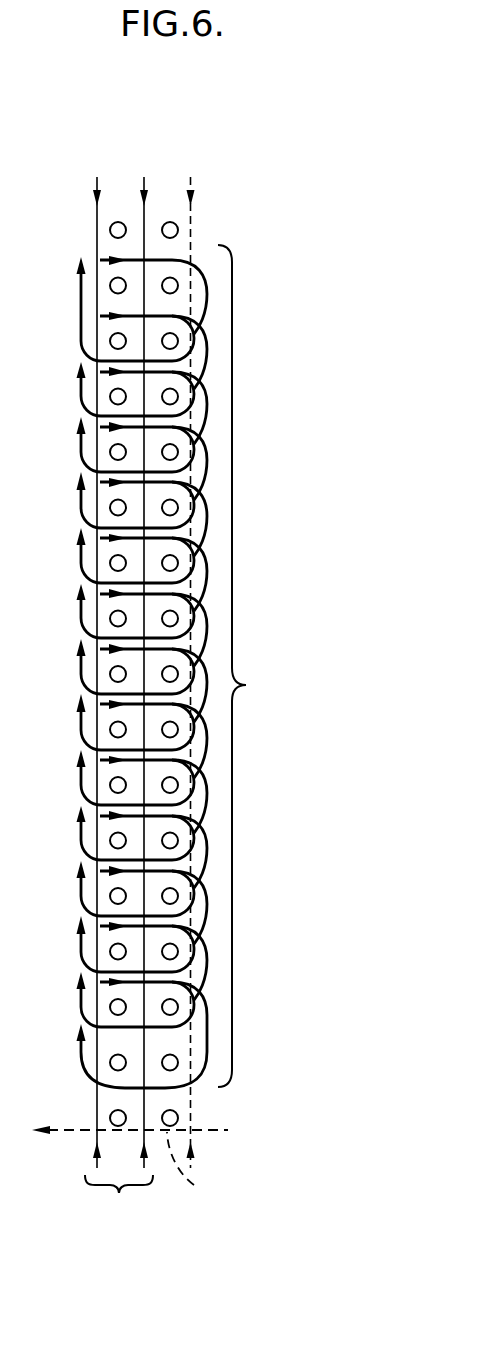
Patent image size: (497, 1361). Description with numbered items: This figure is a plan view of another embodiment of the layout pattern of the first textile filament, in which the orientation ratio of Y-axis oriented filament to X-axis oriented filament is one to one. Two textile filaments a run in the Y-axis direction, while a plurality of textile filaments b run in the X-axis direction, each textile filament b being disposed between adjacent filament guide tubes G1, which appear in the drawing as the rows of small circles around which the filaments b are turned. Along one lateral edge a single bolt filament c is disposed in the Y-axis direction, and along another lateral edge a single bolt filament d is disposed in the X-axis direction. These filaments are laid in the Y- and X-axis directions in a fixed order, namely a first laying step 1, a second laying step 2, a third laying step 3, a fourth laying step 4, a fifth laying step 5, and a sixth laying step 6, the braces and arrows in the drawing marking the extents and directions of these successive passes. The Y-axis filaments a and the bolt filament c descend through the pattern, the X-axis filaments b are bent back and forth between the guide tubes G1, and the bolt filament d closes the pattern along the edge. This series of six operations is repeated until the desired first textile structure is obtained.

The first laying step 1 is at (155, 168).
The second laying step 2 is at (151, 1129).
The third laying step 3 is at (119, 1205).
The fourth laying step 4 is at (75, 245).
The fifth laying step 5 is at (225, 639).
The sixth laying step 6 is at (246, 666).
The textile filaments in the Y-axis direction a is at (152, 263).
The textile filaments in the X-axis direction b is at (133, 488).
The bolt filament in the Y-axis direction c is at (193, 486).
The bolt filament in the X-axis direction d is at (188, 1168).
The filament guide tubes G1 is at (124, 283).